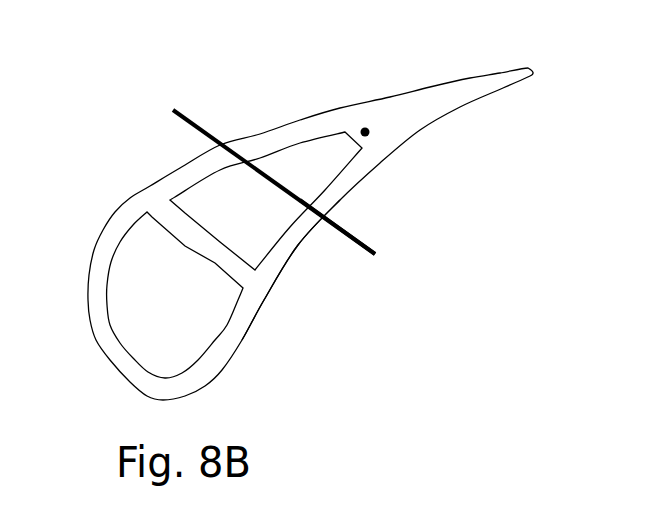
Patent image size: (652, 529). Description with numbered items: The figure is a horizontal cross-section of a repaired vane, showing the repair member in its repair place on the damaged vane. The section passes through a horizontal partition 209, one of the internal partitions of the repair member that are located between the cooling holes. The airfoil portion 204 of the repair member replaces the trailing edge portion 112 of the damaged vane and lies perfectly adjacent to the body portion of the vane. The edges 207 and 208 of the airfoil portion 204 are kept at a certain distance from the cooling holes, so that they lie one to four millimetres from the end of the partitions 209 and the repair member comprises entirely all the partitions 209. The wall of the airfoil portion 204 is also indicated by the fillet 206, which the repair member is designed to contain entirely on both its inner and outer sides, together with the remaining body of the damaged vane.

The airfoil portion 204 is at (452, 155).
The fillet 206 is at (276, 127).
The edge 207 is at (215, 145).
The edge 208 is at (326, 225).
The horizontal partition 209 is at (366, 131).
The trailing edge portion 112 is at (474, 528).